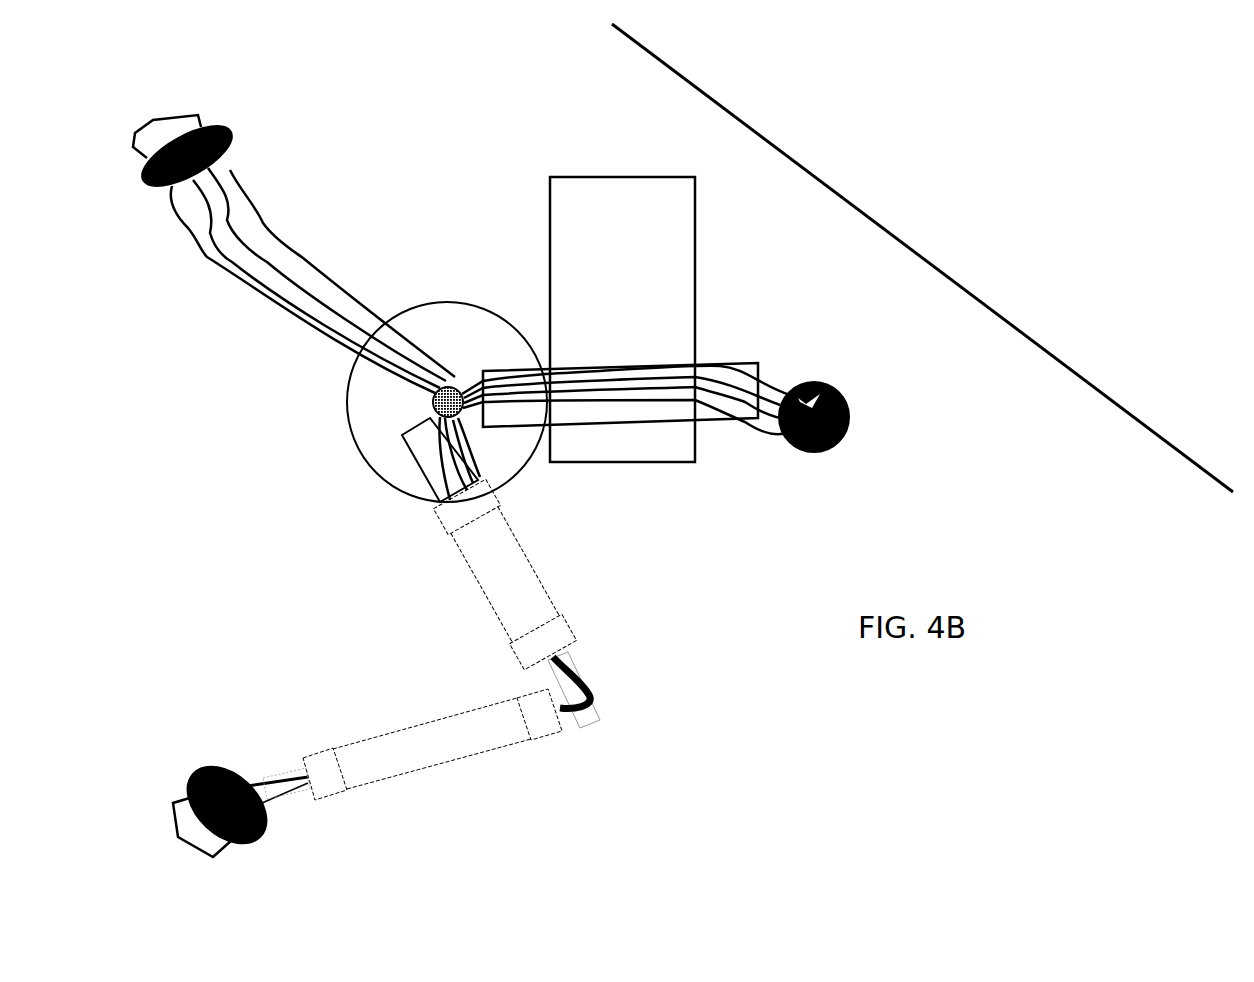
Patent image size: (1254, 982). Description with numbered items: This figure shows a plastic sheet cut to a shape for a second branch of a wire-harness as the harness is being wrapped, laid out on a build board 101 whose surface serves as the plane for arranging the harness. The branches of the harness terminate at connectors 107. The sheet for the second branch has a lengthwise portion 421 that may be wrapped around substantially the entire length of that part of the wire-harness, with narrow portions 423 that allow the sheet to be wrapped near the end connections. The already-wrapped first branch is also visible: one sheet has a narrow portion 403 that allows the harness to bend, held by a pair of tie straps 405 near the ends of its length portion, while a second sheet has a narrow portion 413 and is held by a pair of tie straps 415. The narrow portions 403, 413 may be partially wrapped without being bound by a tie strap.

The build board 101 is at (978, 292).
The connector 107 is at (853, 410).
The narrow portion 403 is at (600, 692).
The tie strap 405 is at (432, 517).
The narrow portion 413 is at (287, 795).
The tie strap 415 is at (557, 737).
The lengthwise portion 421 is at (668, 268).
The narrow portion 423 is at (735, 360).